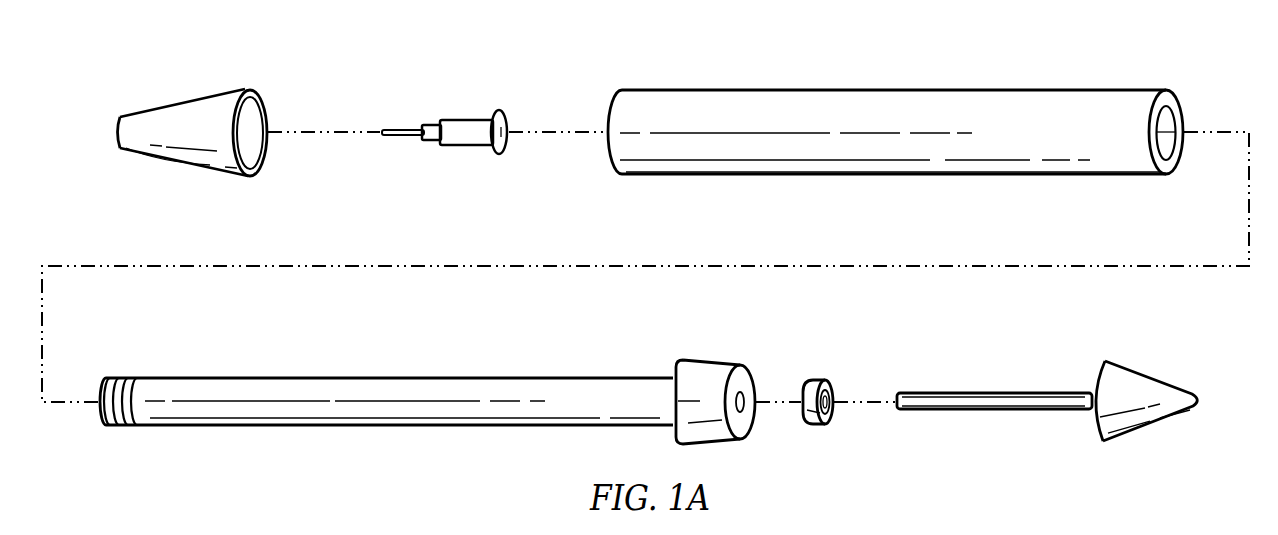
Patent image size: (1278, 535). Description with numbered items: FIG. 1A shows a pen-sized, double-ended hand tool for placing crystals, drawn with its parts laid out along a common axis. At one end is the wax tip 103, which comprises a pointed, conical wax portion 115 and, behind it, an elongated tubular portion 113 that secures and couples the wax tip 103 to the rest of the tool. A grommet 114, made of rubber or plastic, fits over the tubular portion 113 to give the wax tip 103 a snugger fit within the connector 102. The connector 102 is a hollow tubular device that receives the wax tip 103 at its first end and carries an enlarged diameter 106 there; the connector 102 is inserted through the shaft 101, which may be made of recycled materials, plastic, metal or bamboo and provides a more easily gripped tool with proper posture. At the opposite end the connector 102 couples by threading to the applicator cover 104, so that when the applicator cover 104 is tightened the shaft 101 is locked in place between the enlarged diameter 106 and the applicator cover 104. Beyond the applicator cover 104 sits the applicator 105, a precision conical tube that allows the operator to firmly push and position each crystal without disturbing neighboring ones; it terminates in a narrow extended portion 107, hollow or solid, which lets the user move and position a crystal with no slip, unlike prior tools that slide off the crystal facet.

The shaft 101 is at (915, 90).
The connector 102 is at (455, 378).
The wax tip 103 is at (1047, 393).
The applicator cover 104 is at (195, 89).
The applicator 105 is at (444, 96).
The enlarged diameter 106 is at (717, 360).
The narrow extended portion 107 is at (401, 128).
The tubular portion 113 is at (978, 392).
The grommet 114 is at (818, 425).
The wax portion 115 is at (1135, 428).